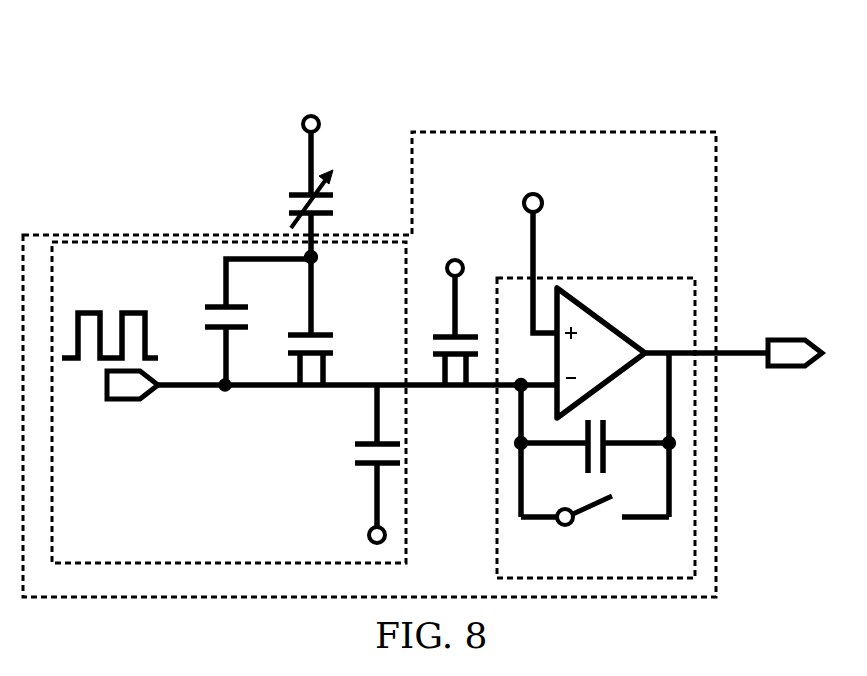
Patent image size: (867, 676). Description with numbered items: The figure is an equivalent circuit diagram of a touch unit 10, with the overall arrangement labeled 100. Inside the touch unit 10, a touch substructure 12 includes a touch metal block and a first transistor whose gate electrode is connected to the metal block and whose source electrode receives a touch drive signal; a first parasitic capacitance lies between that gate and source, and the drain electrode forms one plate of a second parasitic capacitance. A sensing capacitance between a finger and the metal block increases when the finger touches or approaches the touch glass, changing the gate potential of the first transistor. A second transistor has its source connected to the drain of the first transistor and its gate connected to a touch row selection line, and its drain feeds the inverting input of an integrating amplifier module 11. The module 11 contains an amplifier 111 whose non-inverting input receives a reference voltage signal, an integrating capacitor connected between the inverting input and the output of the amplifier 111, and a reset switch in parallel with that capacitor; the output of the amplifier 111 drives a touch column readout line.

The fingerprint sensing circuit 100 is at (385, 47).
The touch unit 10 is at (86, 236).
The touch substructure 12 is at (406, 561).
The integrating amplifier module 11 is at (620, 279).
The amplifier 111 is at (600, 323).